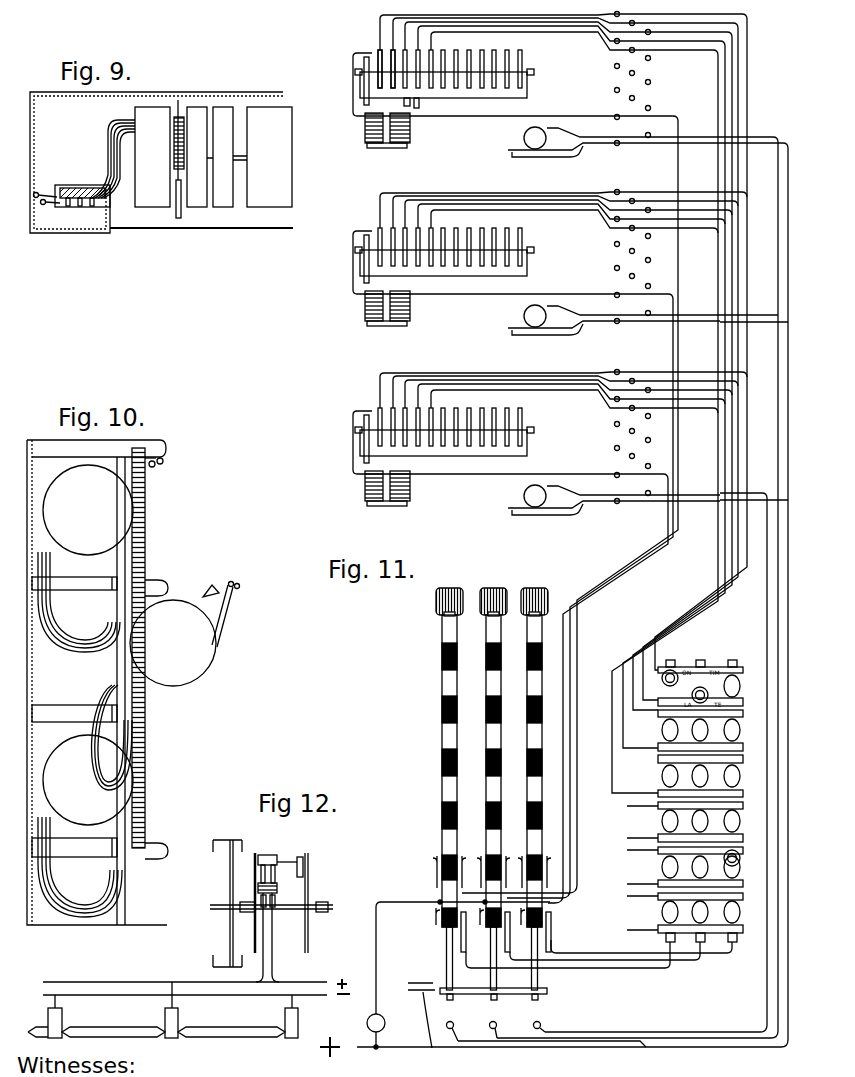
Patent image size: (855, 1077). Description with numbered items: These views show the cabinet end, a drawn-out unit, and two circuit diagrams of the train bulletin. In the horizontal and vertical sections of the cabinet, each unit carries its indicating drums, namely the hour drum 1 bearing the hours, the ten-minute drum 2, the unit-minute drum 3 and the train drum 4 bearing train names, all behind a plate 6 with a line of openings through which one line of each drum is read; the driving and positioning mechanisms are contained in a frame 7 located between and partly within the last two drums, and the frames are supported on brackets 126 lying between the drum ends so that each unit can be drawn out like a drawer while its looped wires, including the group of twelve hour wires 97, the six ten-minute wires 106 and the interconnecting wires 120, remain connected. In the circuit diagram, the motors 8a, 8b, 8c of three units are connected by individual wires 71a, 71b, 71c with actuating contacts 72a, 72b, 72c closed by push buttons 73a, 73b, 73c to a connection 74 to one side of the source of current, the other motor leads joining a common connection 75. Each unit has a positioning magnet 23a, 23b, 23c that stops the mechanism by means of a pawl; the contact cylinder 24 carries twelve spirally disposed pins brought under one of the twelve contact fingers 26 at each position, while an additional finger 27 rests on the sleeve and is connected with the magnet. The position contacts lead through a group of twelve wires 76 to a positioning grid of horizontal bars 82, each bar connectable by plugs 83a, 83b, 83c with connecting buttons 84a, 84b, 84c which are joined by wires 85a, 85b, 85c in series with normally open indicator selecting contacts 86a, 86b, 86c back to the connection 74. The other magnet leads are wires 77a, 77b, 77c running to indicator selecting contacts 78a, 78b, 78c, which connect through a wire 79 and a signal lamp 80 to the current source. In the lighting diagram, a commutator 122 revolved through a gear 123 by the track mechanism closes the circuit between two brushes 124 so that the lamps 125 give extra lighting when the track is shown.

In FIG. 9, the hour drum 1 is at (145, 206).
In FIG. 10, the hour drum 1 is at (180, 604).
In FIG. 9, the ten-minute drum 2 is at (190, 206).
In FIG. 9, the unit-minute drum 3 is at (218, 206).
In FIG. 9, the train drum 4 is at (270, 206).
In FIG. 12, the train drum 4 is at (223, 842).
In FIG. 9, the plate 6 is at (248, 230).
In FIG. 10, the plate 6 is at (229, 630).
In FIG. 12, the frame 7 is at (309, 945).
In FIG. 11, the motor 8a is at (523, 138).
In FIG. 11, the motor 8b is at (523, 316).
In FIG. 11, the motor 8c is at (523, 496).
In FIG. 11, the magnet 23a is at (410, 128).
In FIG. 11, the magnet 23b is at (410, 310).
In FIG. 11, the magnet 23c is at (412, 488).
In FIG. 11, the contact cylinder 24 is at (430, 100).
In FIG. 11, the contact fingers 26 is at (380, 50).
In FIG. 11, the additional finger 27 is at (380, 80).
In FIG. 11, the wire 71a is at (575, 1040).
In FIG. 11, the wire 71b is at (653, 1037).
In FIG. 11, the wire 71c is at (716, 1031).
In FIG. 11, the actuating contact 72a is at (447, 1022).
In FIG. 11, the actuating contact 72b is at (491, 1022).
In FIG. 11, the actuating contact 72c is at (535, 1022).
In FIG. 11, the push button 73a is at (448, 590).
In FIG. 11, the push button 73b is at (492, 590).
In FIG. 11, the push button 73c is at (534, 590).
In FIG. 11, the connection 74 is at (431, 1047).
In FIG. 11, the common connection 75 is at (706, 1048).
In FIG. 11, the wires 76 is at (750, 38).
In FIG. 11, the wire 77a is at (660, 566).
In FIG. 11, the wire 77b is at (610, 585).
In FIG. 11, the wire 77c is at (620, 574).
In FIG. 11, the indicator selecting contact 78a is at (462, 860).
In FIG. 11, the indicator selecting contact 78b is at (506, 860).
In FIG. 11, the indicator selecting contact 78c is at (547, 860).
In FIG. 11, the wire 79 is at (377, 968).
In FIG. 11, the signal lamp 80 is at (386, 1023).
In FIG. 11, the horizontal bars 82 is at (739, 942).
In FIG. 11, the plug 83a is at (668, 669).
In FIG. 11, the plug 83b is at (705, 686).
In FIG. 11, the plug 83c is at (738, 862).
In FIG. 11, the connecting buttons 84a is at (661, 731).
In FIG. 11, the connecting buttons 84b is at (667, 777).
In FIG. 11, the connecting buttons 84c is at (736, 821).
In FIG. 11, the wire 85a is at (660, 970).
In FIG. 11, the wire 85b is at (685, 964).
In FIG. 11, the wire 85c is at (719, 957).
In FIG. 11, the indicator selecting contact 86a is at (466, 926).
In FIG. 11, the indicator selecting contact 86b is at (510, 926).
In FIG. 11, the indicator selecting contact 86c is at (551, 928).
In FIG. 9, the wires 97 is at (37, 192).
In FIG. 9, the wires 106 is at (42, 205).
In FIG. 9, the wires 120 is at (52, 210).
In FIG. 12, the commutator 122 is at (275, 850).
In FIG. 12, the gear 123 is at (304, 862).
In FIG. 12, the brushes 124 is at (274, 908).
In FIG. 12, the lamps 125 is at (240, 1039).
In FIG. 9, the brackets 126 is at (179, 220).
In FIG. 10, the brackets 126 is at (216, 618).